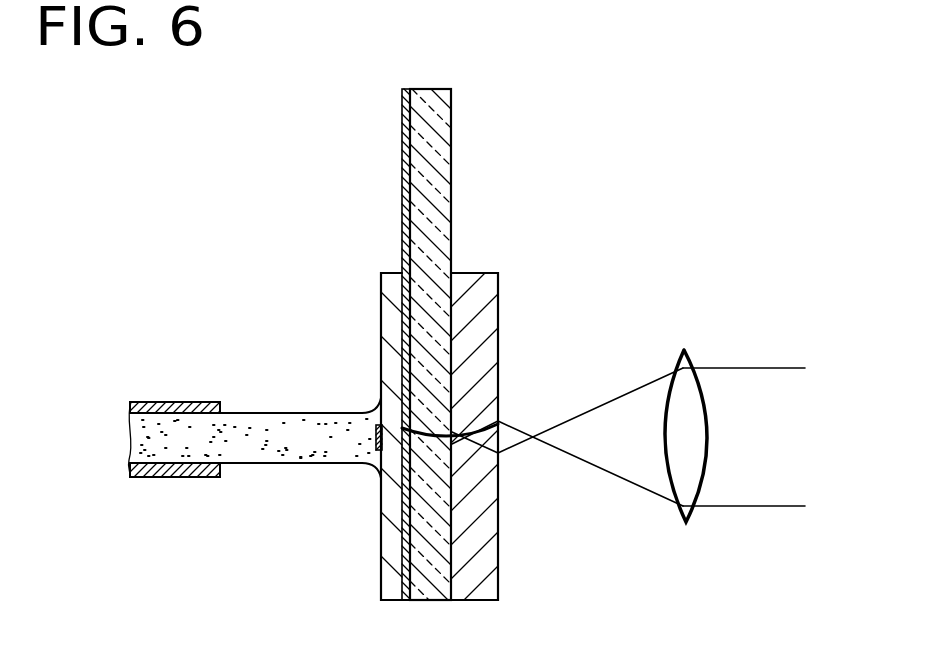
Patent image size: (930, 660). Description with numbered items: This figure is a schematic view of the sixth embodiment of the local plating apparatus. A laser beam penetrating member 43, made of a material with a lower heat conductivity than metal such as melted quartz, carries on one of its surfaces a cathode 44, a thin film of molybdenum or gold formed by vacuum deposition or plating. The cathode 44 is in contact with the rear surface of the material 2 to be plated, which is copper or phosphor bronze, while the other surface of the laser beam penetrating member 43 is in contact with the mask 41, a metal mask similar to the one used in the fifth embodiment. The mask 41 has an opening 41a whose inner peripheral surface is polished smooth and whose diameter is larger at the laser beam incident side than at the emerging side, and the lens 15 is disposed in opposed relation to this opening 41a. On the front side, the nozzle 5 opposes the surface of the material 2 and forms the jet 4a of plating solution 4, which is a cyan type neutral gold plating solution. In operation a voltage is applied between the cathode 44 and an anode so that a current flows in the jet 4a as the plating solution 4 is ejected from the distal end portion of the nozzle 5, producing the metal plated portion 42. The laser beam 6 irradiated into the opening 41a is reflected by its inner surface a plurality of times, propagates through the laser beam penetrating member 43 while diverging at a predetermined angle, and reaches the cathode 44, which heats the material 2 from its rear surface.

The material to be plated 2 is at (395, 591).
The plating solution 4 is at (180, 433).
The jet 4a is at (278, 457).
The nozzle 5 is at (170, 478).
The laser beam 6 is at (741, 507).
The lens 15 is at (700, 410).
The mask 41 is at (500, 292).
The opening 41a is at (472, 422).
The metal plated portion 42 is at (372, 448).
The laser beam penetrating member 43 is at (452, 169).
The cathode 44 is at (401, 166).